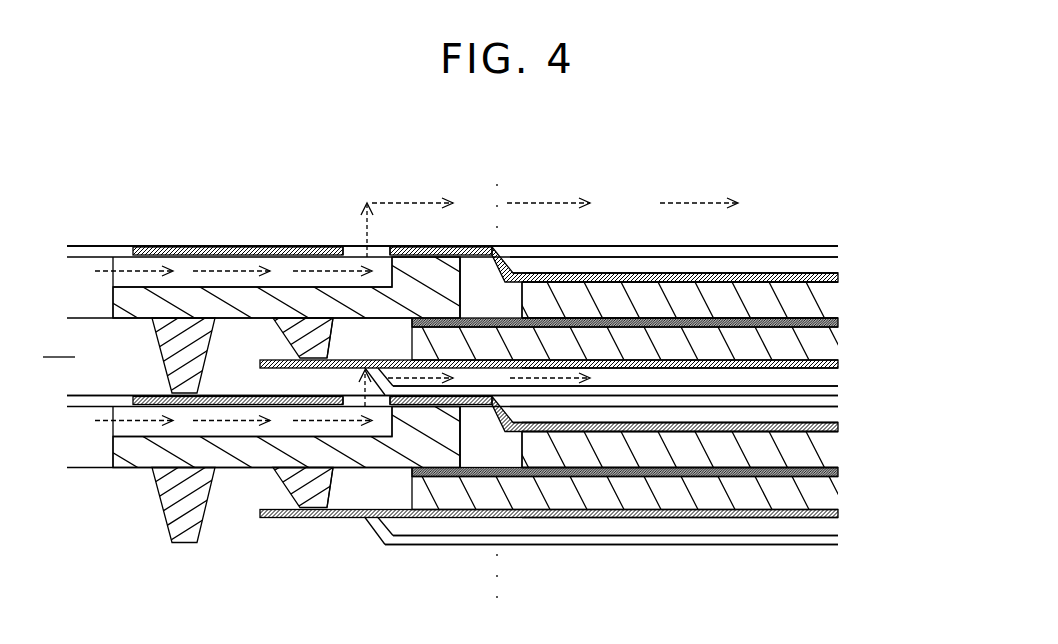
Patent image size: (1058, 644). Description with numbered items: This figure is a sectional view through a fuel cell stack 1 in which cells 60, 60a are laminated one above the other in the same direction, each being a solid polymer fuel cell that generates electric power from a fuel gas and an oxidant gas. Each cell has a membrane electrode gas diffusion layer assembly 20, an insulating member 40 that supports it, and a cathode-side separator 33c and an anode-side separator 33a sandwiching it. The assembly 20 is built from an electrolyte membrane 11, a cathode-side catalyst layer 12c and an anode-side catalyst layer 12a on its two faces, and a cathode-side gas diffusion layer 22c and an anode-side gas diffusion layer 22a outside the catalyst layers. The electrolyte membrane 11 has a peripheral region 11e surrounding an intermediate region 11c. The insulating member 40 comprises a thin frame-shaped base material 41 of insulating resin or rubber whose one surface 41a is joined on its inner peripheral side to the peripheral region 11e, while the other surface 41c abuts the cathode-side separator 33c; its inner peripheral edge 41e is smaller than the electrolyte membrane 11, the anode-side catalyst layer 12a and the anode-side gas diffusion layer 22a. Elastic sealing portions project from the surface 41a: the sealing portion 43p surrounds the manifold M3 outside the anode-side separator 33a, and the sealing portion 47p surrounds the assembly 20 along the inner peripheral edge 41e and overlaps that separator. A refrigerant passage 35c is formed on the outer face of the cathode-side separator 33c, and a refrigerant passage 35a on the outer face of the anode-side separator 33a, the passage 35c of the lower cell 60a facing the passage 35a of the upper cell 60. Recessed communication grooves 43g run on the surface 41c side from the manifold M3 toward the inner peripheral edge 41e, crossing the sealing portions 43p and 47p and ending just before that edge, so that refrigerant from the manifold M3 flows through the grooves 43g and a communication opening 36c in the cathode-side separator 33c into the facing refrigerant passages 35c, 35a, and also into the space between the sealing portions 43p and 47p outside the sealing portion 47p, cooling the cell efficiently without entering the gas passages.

The fuel cell stack 1 is at (830, 191).
The cell 60 is at (852, 235).
The cell 60a is at (855, 549).
The cathode-side separator 33c is at (840, 249).
The anode-side separator 33a is at (827, 392).
The other surface of base material 41c is at (212, 246).
The communication opening 36c is at (355, 246).
The communication grooves 43g is at (282, 258).
The base material 41 is at (118, 307).
The insulating member 40 is at (117, 321).
The sealing portion 43p is at (203, 341).
The one surface of base material 41a is at (309, 399).
The sealing portion 47p is at (333, 337).
The inner peripheral edge 41e is at (462, 302).
The peripheral region 11e is at (447, 300).
The refrigerant passage 35c is at (605, 265).
The refrigerant passage 35a is at (827, 375).
The cathode-side gas diffusion layer 22c is at (832, 294).
The anode-side gas diffusion layer 22a is at (830, 353).
The cathode-side catalyst layer 12c is at (840, 317).
The anode-side catalyst layer 12a is at (840, 327).
The intermediate region 11c is at (567, 313).
The electrolyte membrane 11 is at (840, 322).
The membrane electrode gas diffusion layer assembly 20 is at (920, 270).
The manifold M3 is at (59, 346).